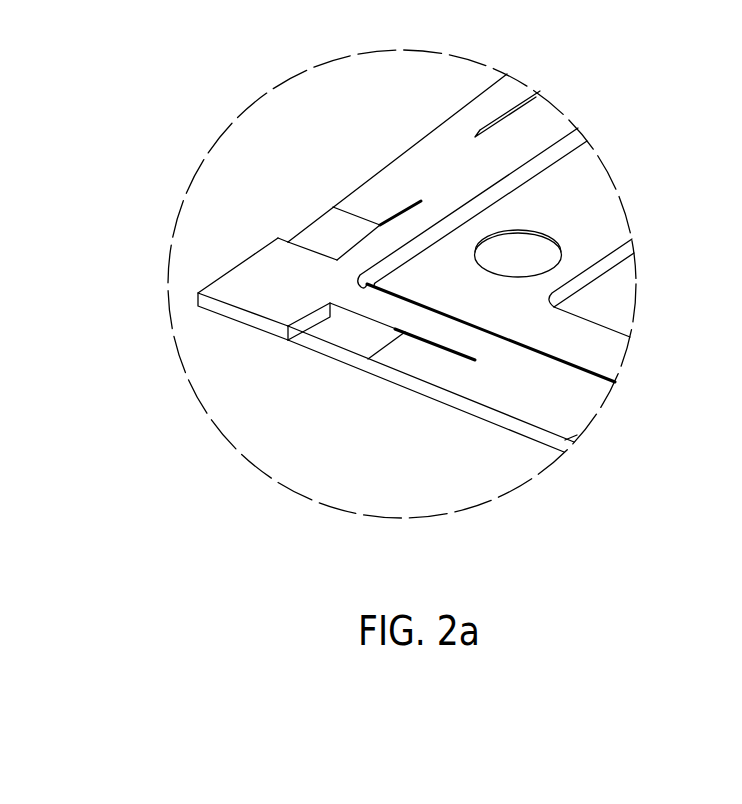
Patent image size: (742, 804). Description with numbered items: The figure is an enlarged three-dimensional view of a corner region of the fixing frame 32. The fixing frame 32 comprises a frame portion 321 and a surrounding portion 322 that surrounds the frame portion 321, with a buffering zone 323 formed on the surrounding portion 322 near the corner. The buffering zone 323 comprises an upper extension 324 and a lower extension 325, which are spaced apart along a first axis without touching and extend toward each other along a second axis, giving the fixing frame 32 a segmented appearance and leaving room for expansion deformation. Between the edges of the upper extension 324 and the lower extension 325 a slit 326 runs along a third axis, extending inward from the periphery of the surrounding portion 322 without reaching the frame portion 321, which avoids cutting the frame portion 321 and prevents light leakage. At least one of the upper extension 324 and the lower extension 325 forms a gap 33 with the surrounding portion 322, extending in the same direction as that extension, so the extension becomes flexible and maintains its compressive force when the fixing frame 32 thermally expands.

The fixing frame 32 is at (205, 80).
The frame portion 321 is at (607, 208).
The surrounding portion 322 is at (543, 123).
The buffering zone 323 is at (328, 346).
The upper extension 324 is at (267, 327).
The lower extension 325 is at (320, 350).
The slit 326 is at (289, 343).
The gap 33 is at (404, 207).